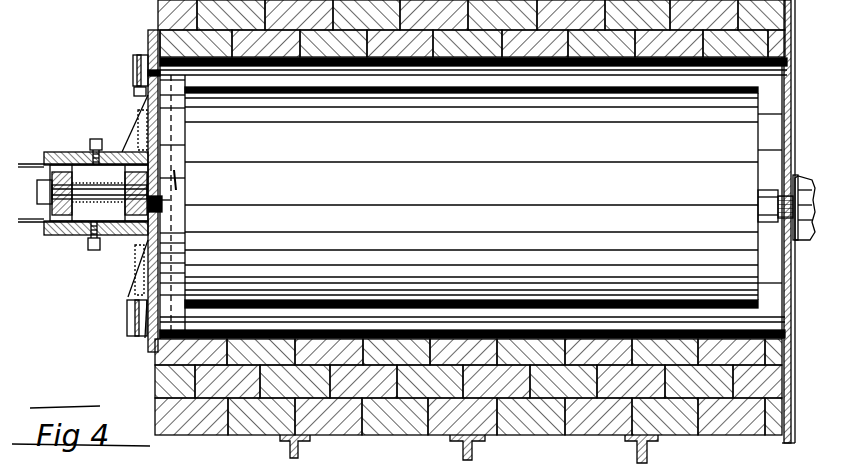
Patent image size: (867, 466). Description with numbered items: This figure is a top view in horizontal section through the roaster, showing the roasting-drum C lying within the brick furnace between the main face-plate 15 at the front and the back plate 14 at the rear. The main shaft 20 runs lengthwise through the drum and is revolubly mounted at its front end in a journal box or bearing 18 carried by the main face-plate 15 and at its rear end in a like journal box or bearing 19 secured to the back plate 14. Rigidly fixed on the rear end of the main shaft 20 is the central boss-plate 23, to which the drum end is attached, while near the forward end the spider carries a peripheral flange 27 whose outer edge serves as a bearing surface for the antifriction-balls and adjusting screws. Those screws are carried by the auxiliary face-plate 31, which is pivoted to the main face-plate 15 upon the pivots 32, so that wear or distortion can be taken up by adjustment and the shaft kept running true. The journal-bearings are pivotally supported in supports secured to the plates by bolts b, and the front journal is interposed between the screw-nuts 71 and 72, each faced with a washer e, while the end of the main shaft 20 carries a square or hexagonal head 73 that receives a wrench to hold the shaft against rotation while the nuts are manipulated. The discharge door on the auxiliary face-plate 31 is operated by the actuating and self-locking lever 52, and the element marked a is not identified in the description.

The back plate 14 is at (791, 277).
The main face-plate 15 is at (153, 30).
The roasting-drum C is at (473, 198).
The central boss-plate 23 is at (766, 190).
The journal box or bearing 19 is at (798, 178).
The main shaft 20 is at (779, 225).
The peripheral flange 27 is at (180, 183).
The bolt a is at (133, 78).
The auxiliary face-plate 31 is at (144, 54).
The pivots 32 is at (136, 338).
The screw-nut 72 is at (122, 152).
The journal box or bearing 18 is at (74, 158).
The screw-nut 71 is at (60, 235).
The actuating and self-locking lever 52 is at (24, 166).
The square or hexagonal head 73 is at (50, 208).
The bolts b is at (96, 139).
The washer e is at (72, 236).